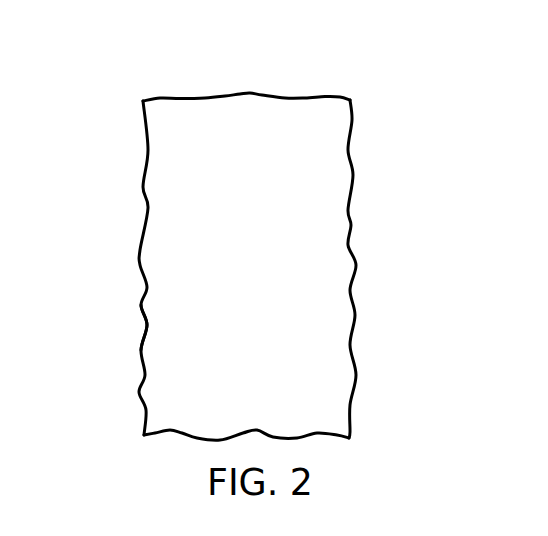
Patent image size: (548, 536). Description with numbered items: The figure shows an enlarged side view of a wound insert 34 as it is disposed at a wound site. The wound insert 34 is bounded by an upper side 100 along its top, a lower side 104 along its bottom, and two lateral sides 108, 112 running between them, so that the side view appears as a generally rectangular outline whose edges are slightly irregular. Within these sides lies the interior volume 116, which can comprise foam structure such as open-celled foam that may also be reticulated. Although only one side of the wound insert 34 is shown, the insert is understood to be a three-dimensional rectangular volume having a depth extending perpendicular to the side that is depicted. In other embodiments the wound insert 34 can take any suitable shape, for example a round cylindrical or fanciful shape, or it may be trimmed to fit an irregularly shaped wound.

The wound insert 34 is at (250, 254).
The upper side 100 is at (250, 93).
The lower side 104 is at (157, 435).
The lateral side 108 is at (140, 252).
The lateral side 112 is at (357, 267).
The interior volume 116 is at (148, 325).